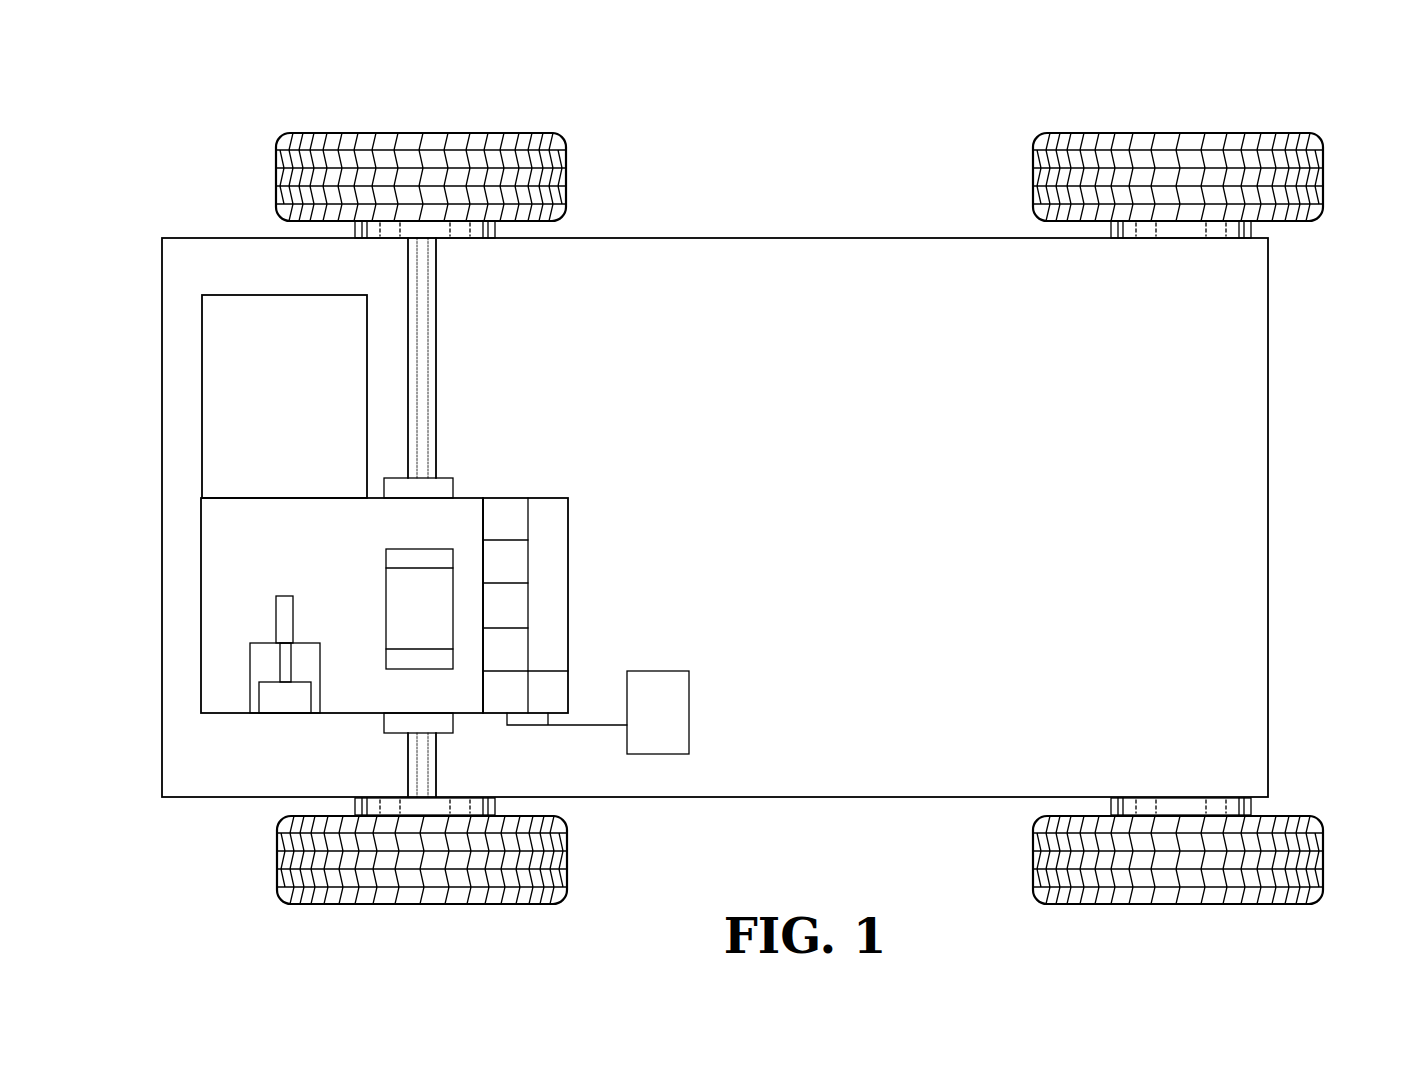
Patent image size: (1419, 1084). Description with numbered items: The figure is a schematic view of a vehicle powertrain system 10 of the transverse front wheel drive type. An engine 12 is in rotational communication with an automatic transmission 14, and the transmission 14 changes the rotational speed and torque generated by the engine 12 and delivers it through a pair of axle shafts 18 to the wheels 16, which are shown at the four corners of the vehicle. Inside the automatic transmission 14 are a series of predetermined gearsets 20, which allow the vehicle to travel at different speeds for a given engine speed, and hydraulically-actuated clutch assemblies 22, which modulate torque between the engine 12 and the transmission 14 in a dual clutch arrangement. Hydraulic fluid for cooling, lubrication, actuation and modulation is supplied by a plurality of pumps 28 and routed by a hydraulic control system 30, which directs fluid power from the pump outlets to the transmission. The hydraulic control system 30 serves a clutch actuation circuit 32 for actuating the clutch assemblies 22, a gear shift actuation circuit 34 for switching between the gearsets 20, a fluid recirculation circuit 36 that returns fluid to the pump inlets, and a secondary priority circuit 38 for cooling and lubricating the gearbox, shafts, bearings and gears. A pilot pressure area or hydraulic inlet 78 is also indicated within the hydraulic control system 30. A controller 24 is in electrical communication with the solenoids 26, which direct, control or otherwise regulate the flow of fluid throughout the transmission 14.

The vehicle powertrain system 10 is at (182, 116).
The engine 12 is at (264, 405).
The automatic transmission 14 is at (202, 586).
The wheels 16 is at (566, 158).
The axle shafts 18 is at (431, 327).
The gearsets 20 is at (406, 617).
The clutch assemblies 22 is at (445, 556).
The controller 24 is at (646, 724).
The solenoids 26 is at (493, 703).
The pumps 28 is at (305, 643).
The hydraulic control system 30 is at (528, 499).
The clutch actuation circuit 32 is at (493, 660).
The gear shift actuation circuit 34 is at (493, 618).
The fluid recirculation circuit 36 is at (493, 574).
The secondary pump portion or priority circuit 38 is at (493, 530).
The pilot pressure area or hydraulic inlet 78 is at (535, 594).